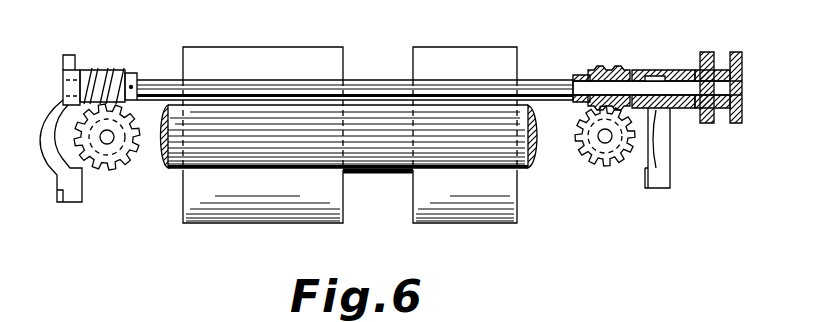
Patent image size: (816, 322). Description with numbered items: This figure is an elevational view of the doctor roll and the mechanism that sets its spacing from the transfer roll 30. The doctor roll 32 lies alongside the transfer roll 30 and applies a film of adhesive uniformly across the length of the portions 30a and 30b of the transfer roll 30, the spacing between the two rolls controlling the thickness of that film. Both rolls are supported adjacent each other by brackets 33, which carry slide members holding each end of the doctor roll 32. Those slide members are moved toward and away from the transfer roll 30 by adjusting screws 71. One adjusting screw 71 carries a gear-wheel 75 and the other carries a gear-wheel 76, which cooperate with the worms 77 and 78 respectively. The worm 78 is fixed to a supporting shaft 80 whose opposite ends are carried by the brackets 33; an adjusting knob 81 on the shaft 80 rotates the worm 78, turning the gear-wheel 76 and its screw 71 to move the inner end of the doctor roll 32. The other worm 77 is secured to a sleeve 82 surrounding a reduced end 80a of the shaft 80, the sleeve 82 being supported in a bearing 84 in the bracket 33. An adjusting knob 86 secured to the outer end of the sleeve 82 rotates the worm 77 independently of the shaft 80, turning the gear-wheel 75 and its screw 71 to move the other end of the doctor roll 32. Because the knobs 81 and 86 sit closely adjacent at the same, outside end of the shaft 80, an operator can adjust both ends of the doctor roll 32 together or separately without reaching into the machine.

The transfer roll 30 is at (392, 29).
The portion of transfer roll 30a is at (516, 47).
The portion of transfer roll 30b is at (246, 47).
The doctor roll 32 is at (522, 170).
The bracket 33 is at (70, 202).
The adjusting screw 71 is at (110, 140).
The gear-wheel 75 is at (610, 166).
The gear-wheel 76 is at (96, 167).
The worm 77 is at (609, 68).
The worm 78 is at (88, 70).
The supporting shaft 80 is at (152, 80).
The reduced end of shaft 80a is at (574, 99).
The adjusting knob 81 is at (738, 52).
The sleeve 82 is at (578, 75).
The bearing 84 is at (668, 70).
The adjusting knob 86 is at (707, 52).